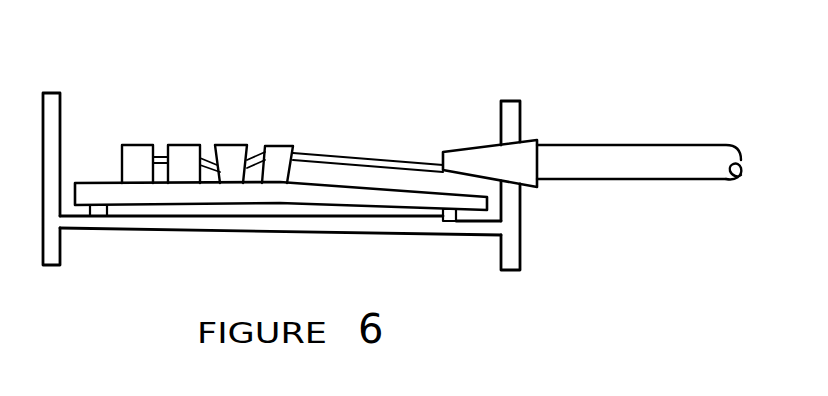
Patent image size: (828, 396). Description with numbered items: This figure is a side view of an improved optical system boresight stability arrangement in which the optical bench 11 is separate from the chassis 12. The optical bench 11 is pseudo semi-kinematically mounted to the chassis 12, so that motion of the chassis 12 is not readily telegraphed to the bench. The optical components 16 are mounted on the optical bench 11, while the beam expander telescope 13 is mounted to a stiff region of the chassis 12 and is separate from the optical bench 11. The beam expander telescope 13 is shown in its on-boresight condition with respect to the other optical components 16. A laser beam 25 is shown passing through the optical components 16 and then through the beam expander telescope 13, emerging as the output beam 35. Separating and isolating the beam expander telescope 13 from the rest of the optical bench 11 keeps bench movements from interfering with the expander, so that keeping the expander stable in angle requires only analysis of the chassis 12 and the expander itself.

The optical bench 11 is at (92, 180).
The chassis 12 is at (525, 240).
The beam expander telescope 13 is at (528, 136).
The optical components 16 is at (275, 140).
The laser beam 25 is at (357, 137).
The output beam 35 is at (617, 143).